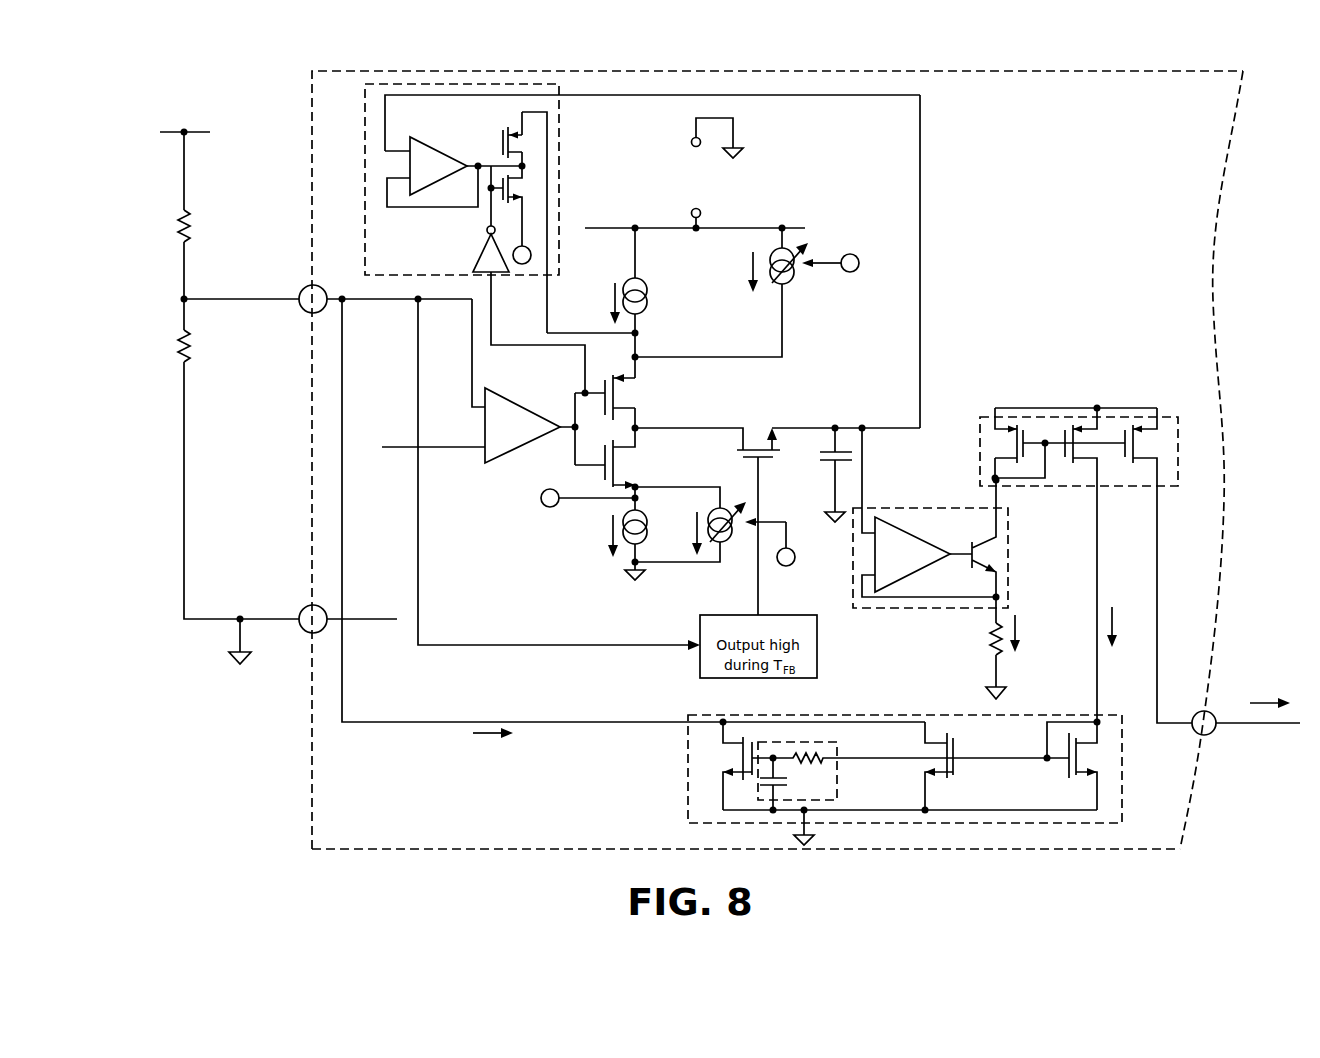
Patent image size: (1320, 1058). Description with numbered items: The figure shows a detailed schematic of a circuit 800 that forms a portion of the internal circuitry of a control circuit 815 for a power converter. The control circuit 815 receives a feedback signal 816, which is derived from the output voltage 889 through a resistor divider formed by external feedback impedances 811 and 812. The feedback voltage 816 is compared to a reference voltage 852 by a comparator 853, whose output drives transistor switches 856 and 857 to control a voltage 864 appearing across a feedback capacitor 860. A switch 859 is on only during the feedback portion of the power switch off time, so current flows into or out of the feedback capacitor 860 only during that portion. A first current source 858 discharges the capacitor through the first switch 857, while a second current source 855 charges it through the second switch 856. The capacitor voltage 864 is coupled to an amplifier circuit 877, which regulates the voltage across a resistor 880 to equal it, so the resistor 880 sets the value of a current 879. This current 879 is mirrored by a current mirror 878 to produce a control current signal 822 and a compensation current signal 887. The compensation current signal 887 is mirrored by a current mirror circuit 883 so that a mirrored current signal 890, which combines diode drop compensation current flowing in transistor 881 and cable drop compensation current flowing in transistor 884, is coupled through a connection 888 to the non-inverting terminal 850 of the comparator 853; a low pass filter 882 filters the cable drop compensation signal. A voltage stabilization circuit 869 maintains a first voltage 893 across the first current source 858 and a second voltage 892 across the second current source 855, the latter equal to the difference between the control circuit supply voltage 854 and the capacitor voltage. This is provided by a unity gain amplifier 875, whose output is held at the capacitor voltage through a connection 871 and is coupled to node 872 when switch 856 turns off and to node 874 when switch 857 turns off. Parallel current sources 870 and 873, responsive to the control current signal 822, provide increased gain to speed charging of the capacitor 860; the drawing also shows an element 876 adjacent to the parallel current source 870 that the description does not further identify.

The circuit 800 is at (178, 94).
The external feedback impedance 811 is at (193, 226).
The external feedback impedance 812 is at (200, 351).
The control circuit 815 is at (393, 852).
The feedback signal 816 is at (248, 457).
The control current signal 822 is at (1272, 710).
The non-inverting terminal 850 is at (480, 402).
The reference voltage 852 is at (367, 530).
The comparator 853 is at (510, 392).
The control circuit supply voltage 854 is at (710, 168).
The second current source 855 is at (603, 292).
The second switch 856 is at (643, 383).
The first switch 857 is at (640, 470).
The first current source 858 is at (580, 530).
The switch 859 is at (753, 420).
The feedback capacitor 860 is at (840, 440).
The voltage 864 is at (808, 440).
The voltage stabilization circuit 869 is at (565, 152).
The current source 870 is at (723, 262).
The connection 871 is at (927, 295).
The node 872 is at (638, 352).
The current source 873 is at (698, 557).
The node 874 is at (528, 497).
The unity gain amplifier 875 is at (447, 152).
The controlled current source I3 876 is at (823, 273).
The amplifier circuit 877 is at (892, 505).
The current mirror 878 is at (1038, 403).
The current 879 is at (1022, 628).
The resistor 880 is at (983, 633).
The transistor 881 is at (957, 775).
The low pass filter 882 is at (840, 777).
The current mirror circuit 883 is at (682, 760).
The transistor 884 is at (698, 732).
The compensation current signal 887 is at (1123, 633).
The connection 888 is at (400, 723).
The output voltage 889 is at (133, 262).
The mirrored current signal 890 is at (505, 745).
The second voltage 892 is at (660, 282).
The first voltage 893 is at (653, 550).